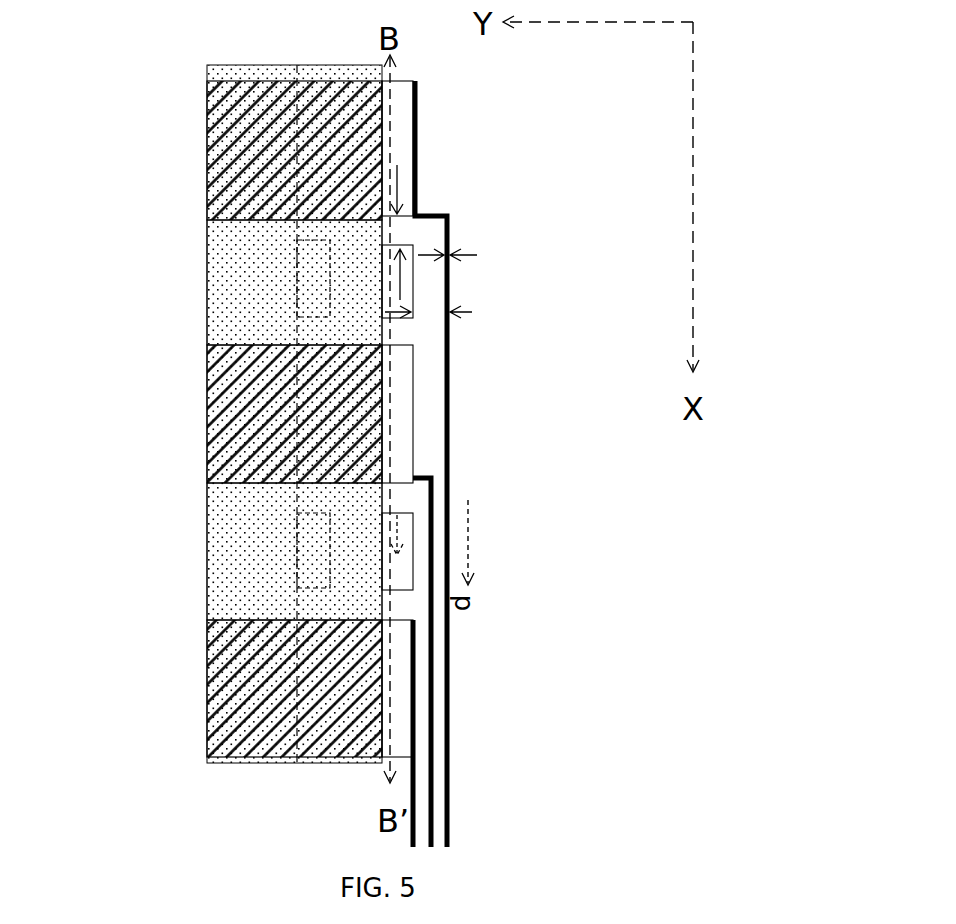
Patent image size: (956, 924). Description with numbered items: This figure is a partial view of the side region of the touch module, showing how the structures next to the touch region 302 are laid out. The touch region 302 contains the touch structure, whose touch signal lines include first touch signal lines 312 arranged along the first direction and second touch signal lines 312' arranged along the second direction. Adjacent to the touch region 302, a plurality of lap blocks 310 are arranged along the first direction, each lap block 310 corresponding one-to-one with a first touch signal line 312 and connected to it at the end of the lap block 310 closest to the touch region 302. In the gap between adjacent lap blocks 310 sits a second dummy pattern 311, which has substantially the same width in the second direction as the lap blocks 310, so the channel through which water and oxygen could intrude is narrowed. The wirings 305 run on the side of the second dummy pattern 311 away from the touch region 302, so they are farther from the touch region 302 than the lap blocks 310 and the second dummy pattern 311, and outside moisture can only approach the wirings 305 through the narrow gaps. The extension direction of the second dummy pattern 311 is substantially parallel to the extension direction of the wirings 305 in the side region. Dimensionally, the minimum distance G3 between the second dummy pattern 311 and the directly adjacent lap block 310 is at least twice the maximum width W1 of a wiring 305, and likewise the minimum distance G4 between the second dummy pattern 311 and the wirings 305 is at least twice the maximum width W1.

The touch region 302 is at (294, 282).
The wiring 305 is at (418, 767).
The lap block 310 is at (397, 418).
The second dummy pattern 311 is at (415, 535).
The first touch signal line 312 is at (202, 419).
The second touch signal line 312' is at (225, 551).
The maximum width of the wiring W1 is at (475, 257).
The minimum distance between second dummy pattern and adjacent lap block G3 is at (403, 235).
The minimum distance between second dummy pattern and wirings G4 is at (432, 314).